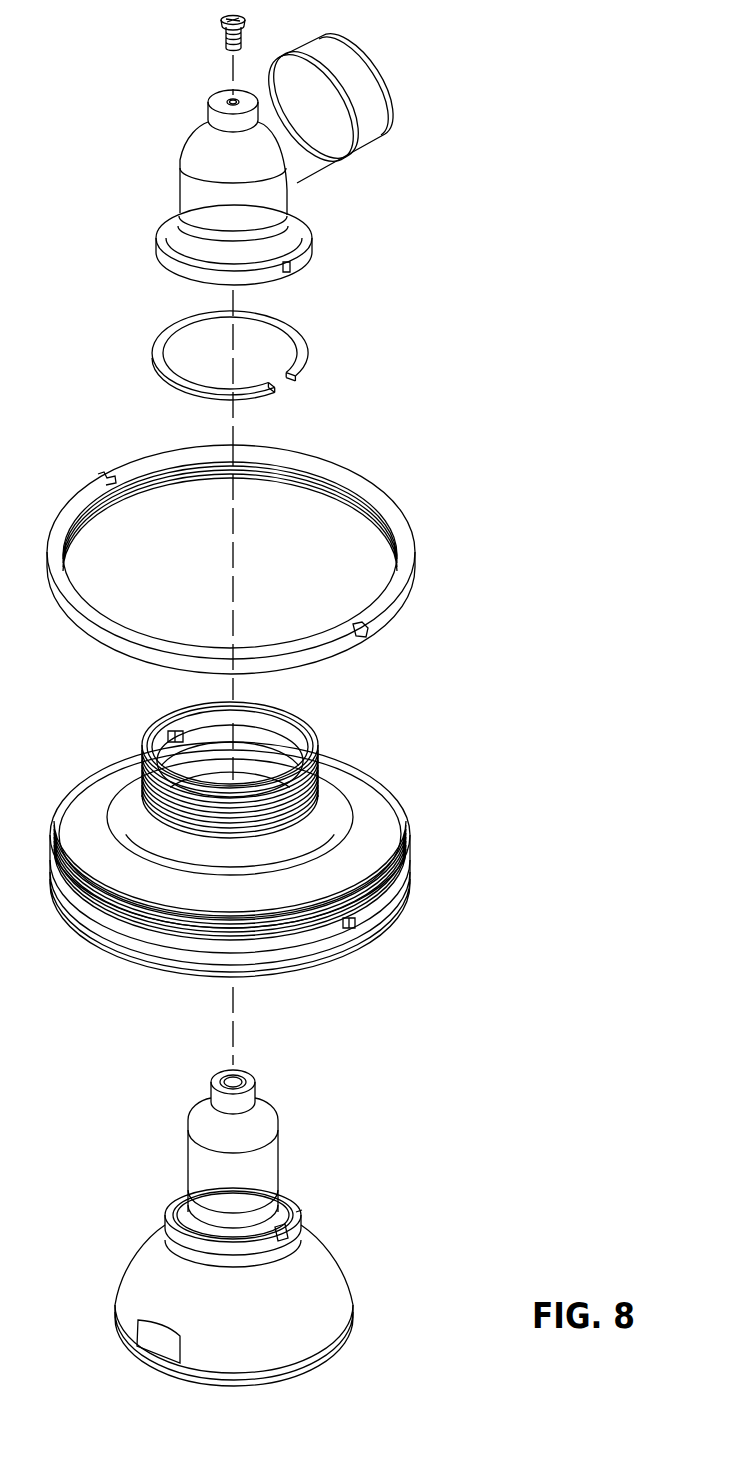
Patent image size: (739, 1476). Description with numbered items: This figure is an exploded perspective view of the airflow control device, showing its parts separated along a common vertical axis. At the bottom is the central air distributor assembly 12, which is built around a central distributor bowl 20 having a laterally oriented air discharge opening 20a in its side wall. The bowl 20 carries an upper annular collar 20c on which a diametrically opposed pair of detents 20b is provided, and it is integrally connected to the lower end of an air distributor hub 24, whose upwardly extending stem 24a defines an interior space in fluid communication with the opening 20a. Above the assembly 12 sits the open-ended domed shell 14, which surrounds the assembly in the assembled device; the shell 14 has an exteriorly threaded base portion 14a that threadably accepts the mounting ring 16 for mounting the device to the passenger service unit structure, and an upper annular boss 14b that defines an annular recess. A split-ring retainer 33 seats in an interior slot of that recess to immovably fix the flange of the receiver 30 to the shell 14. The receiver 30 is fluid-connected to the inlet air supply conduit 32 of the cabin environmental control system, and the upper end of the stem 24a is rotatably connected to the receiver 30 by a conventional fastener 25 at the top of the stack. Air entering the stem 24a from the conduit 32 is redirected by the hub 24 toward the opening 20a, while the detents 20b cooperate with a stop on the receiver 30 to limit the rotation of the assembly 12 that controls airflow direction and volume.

The central air distributor assembly 12 is at (131, 1202).
The domed shell 14 is at (225, 840).
The exteriorly threaded base portion 14a is at (110, 897).
The upper annular boss 14b is at (148, 808).
The mounting ring 16 is at (397, 522).
The central distributor bowl 20 is at (236, 1256).
The air discharge opening 20a is at (155, 1342).
The detents 20b is at (282, 1225).
The upper annular collar 20c is at (300, 1213).
The air distributor hub 24 is at (285, 1145).
The stem 24a is at (258, 1197).
The fastener 25 is at (222, 32).
The receiver 30 is at (253, 222).
The inlet air supply conduit 32 is at (352, 108).
The split-ring retainer 33 is at (298, 350).